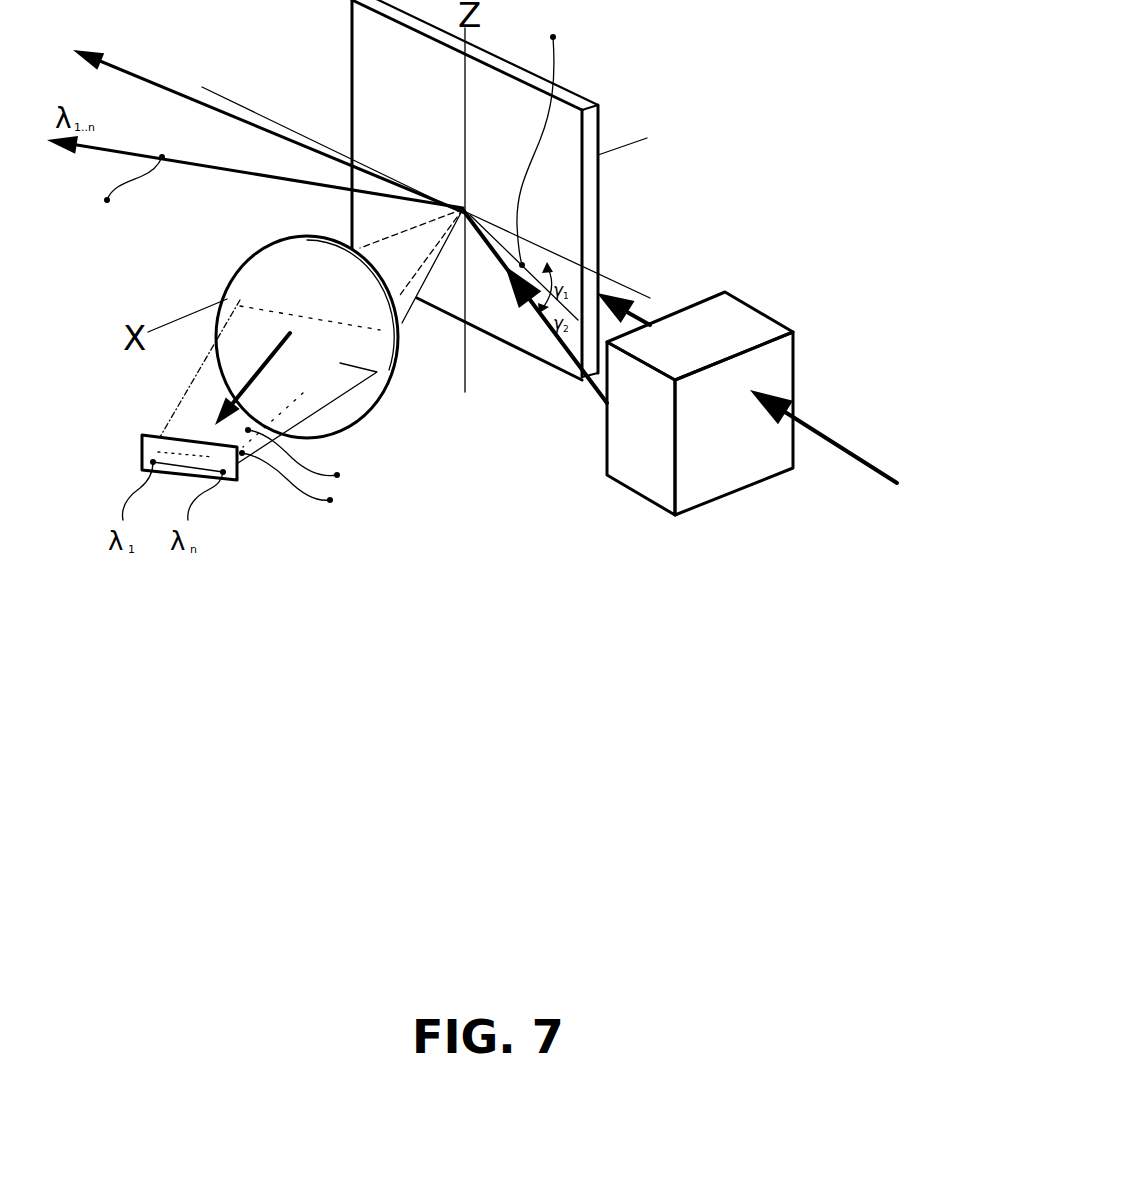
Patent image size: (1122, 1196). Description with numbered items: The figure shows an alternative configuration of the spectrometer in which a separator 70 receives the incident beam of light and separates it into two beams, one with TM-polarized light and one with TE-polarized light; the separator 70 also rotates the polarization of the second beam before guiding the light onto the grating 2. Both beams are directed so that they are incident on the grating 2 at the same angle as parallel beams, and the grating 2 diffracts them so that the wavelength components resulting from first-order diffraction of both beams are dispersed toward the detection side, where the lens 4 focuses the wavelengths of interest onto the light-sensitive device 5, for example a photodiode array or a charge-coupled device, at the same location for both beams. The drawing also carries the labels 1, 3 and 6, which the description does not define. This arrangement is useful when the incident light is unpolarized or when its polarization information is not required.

The diffraction grating 1 is at (600, 252).
The grating 2 is at (365, 27).
The diffracted light beam 3 is at (164, 20).
The lens 4 is at (368, 407).
The light-sensitive device 5 is at (233, 480).
The incident light beam 6 is at (560, 335).
The separator 70 is at (645, 487).